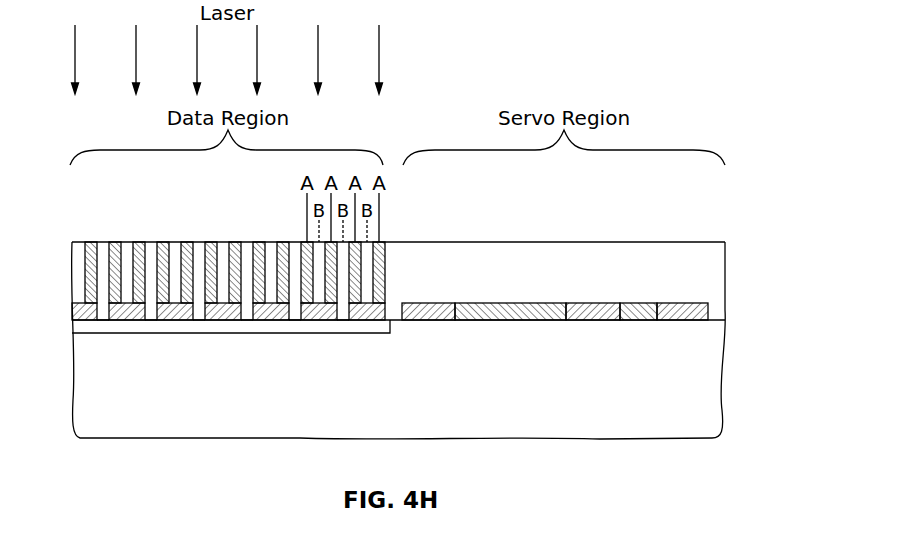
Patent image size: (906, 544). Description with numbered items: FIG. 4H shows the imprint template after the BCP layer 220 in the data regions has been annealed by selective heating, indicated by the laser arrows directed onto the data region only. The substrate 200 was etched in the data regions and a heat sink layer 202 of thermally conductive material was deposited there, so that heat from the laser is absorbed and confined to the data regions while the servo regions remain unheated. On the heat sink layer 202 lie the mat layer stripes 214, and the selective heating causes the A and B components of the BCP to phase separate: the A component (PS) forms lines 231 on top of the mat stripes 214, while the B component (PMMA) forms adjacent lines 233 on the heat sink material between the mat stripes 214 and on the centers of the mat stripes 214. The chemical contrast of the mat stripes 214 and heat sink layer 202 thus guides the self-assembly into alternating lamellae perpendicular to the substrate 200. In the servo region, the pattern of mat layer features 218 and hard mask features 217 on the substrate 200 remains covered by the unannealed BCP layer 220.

The substrate 200 is at (713, 375).
The layer of BCP material 220 is at (715, 285).
The heat sink layer 202 is at (217, 330).
The mat layer stripes 214 is at (370, 322).
The lines 231 is at (384, 260).
The lines 233 is at (342, 312).
The hard mask features 217 is at (508, 302).
The mat layer features 218 is at (425, 303).